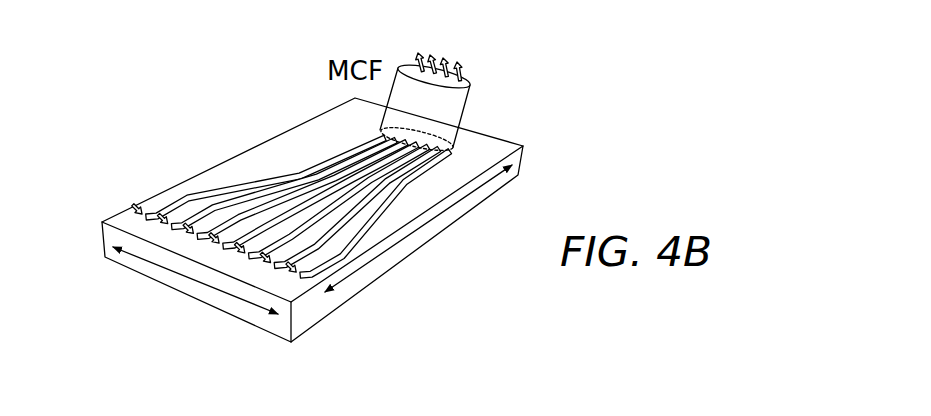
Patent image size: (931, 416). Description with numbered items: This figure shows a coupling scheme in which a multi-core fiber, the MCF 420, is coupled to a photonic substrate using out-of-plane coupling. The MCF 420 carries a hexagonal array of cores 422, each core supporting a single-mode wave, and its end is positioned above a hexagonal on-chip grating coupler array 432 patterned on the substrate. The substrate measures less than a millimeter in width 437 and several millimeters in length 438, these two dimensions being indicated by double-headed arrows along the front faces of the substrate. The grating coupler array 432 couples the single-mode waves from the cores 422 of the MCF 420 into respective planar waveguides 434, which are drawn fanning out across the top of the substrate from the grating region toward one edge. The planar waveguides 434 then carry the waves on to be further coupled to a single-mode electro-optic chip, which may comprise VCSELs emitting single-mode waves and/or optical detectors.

The MCF 420 is at (467, 107).
The cores 422 is at (490, 63).
The grating coupler array 432 is at (343, 128).
The planar waveguides 434 is at (223, 178).
The width 437 is at (195, 278).
The length 438 is at (408, 237).